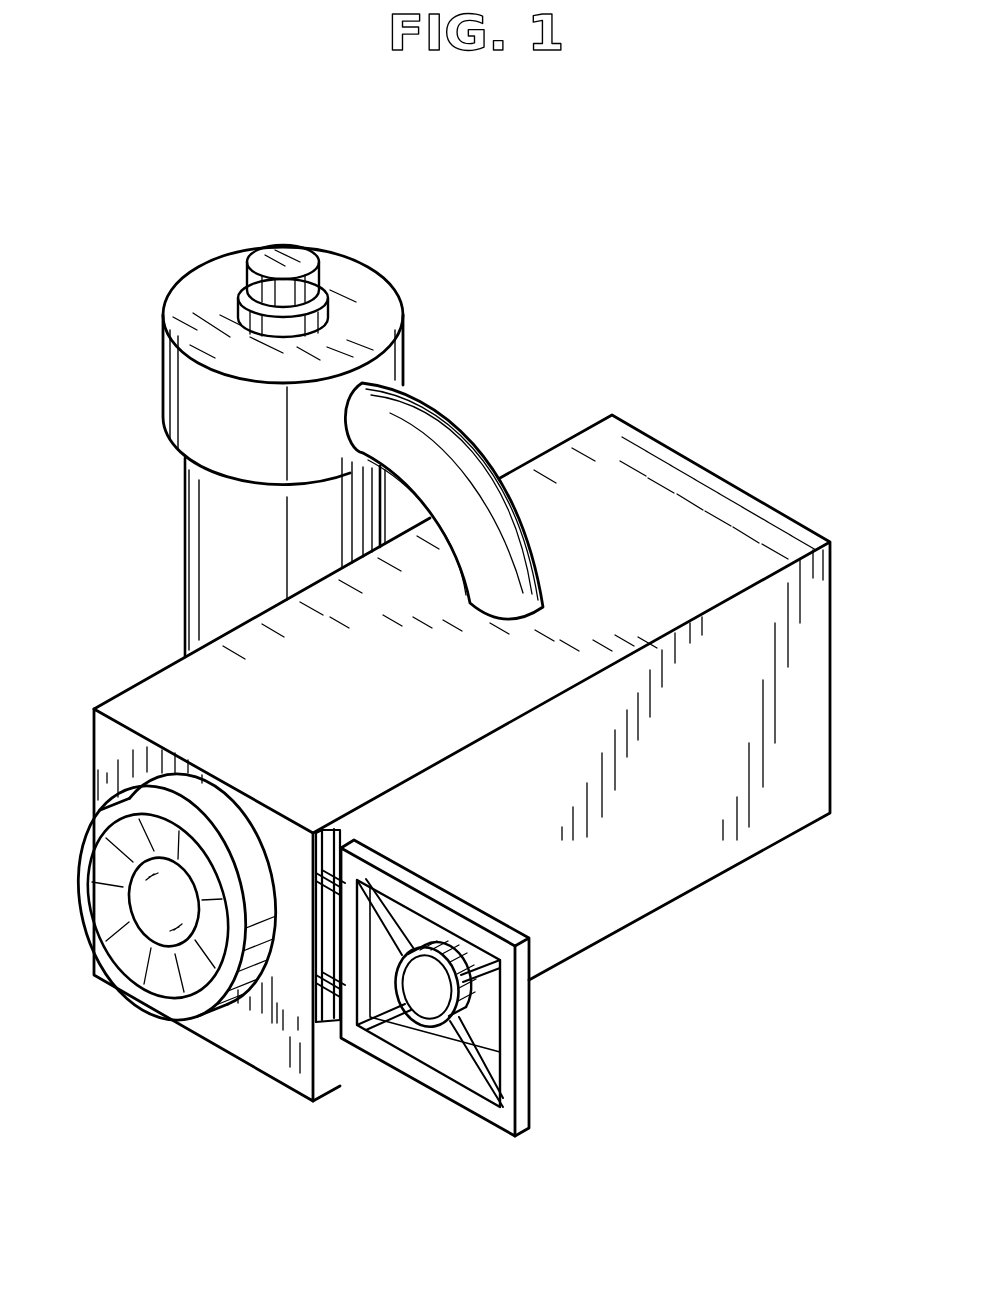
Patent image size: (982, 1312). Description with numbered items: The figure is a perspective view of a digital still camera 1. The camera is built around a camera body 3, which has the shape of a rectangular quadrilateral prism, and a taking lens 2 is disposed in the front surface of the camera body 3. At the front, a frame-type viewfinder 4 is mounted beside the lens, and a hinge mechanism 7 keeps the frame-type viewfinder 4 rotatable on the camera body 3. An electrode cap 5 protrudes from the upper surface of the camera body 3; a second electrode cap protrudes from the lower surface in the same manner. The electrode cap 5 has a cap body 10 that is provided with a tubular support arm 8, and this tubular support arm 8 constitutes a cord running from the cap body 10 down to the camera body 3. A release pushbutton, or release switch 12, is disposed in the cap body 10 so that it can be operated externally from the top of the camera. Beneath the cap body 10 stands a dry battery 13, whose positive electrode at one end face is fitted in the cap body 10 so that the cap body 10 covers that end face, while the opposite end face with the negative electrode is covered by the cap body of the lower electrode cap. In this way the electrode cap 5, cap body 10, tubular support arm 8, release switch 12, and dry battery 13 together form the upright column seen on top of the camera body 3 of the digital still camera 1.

The digital still camera 1 is at (776, 475).
The taking lens 2 is at (148, 912).
The camera body 3 is at (685, 852).
The frame-type viewfinder 4 is at (525, 1077).
The electrode cap 5 is at (375, 387).
The hinge mechanism 7 is at (305, 1007).
The tubular support arm 8 is at (437, 437).
The cap body 10 is at (383, 290).
The release switch 12 is at (285, 257).
The dry battery 13 is at (210, 557).